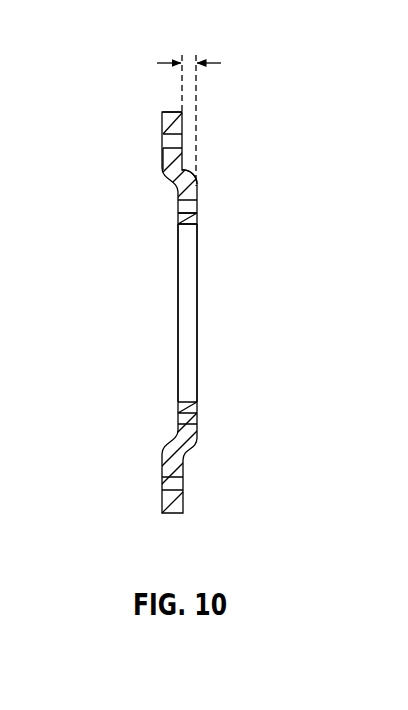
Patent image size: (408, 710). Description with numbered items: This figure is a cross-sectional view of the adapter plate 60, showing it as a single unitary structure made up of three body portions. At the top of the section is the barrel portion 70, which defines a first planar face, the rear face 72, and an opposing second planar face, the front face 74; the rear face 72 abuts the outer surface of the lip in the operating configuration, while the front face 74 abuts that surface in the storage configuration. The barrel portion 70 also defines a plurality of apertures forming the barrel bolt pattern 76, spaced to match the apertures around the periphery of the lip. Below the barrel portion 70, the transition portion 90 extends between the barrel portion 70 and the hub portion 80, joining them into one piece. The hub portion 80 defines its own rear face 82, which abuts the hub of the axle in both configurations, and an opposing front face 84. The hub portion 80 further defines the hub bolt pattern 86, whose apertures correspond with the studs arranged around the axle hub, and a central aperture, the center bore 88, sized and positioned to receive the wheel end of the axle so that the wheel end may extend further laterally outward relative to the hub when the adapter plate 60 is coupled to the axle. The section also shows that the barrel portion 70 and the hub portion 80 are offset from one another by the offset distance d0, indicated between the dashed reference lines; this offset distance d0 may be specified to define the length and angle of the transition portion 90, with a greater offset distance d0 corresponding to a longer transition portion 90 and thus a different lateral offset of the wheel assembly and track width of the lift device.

The adapter plate 60 is at (138, 84).
The barrel portion 70 is at (203, 103).
The rear face 72 is at (163, 133).
The front face 74 is at (183, 128).
The barrel bolt pattern 76 is at (162, 147).
The hub portion 80 is at (201, 199).
The rear face 82 is at (178, 218).
The front face 84 is at (198, 406).
The hub bolt pattern 86 is at (176, 418).
The center bore 88 is at (173, 322).
The transition portion 90 is at (194, 169).
The offset distance d0 is at (157, 63).